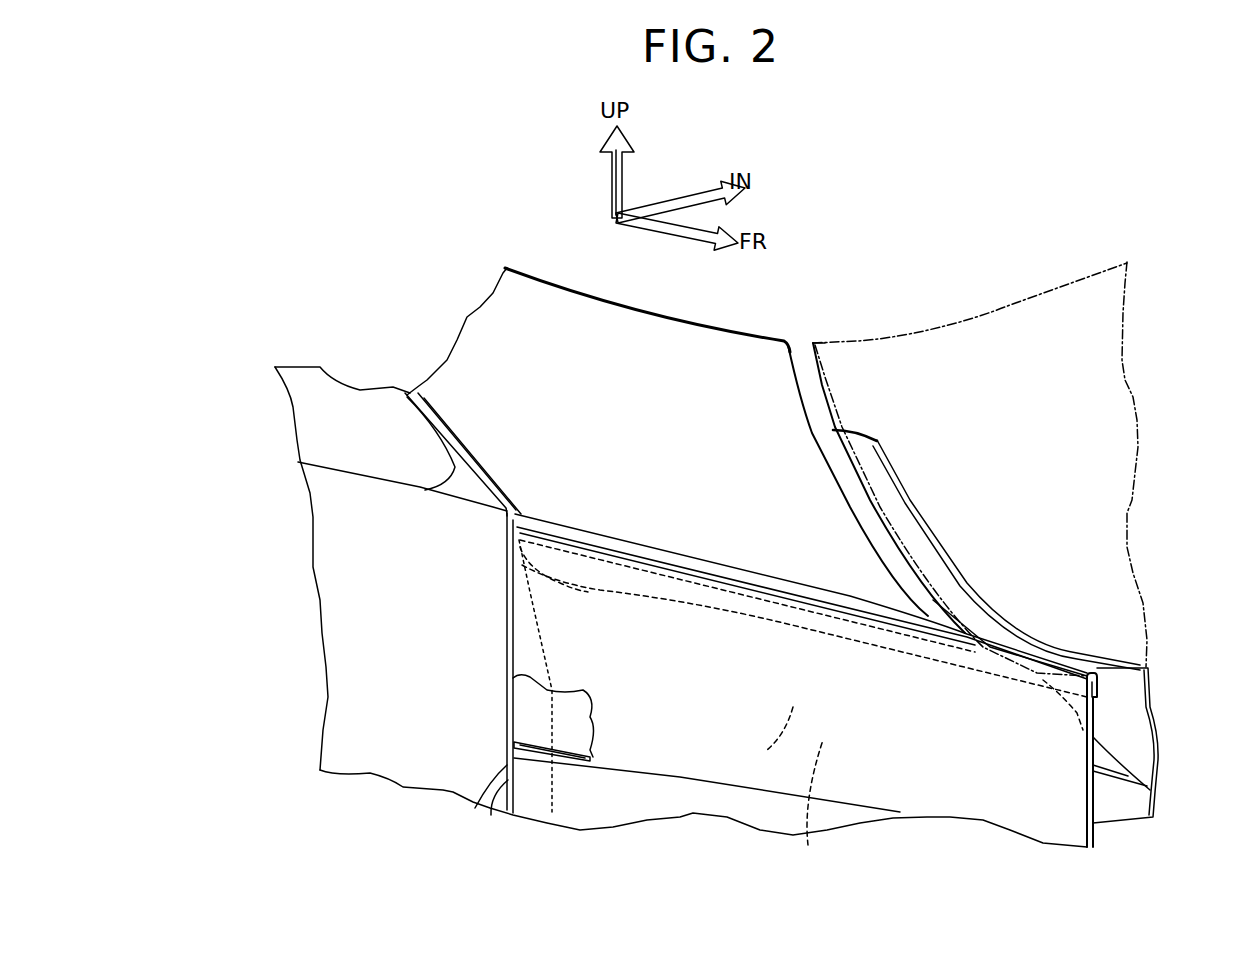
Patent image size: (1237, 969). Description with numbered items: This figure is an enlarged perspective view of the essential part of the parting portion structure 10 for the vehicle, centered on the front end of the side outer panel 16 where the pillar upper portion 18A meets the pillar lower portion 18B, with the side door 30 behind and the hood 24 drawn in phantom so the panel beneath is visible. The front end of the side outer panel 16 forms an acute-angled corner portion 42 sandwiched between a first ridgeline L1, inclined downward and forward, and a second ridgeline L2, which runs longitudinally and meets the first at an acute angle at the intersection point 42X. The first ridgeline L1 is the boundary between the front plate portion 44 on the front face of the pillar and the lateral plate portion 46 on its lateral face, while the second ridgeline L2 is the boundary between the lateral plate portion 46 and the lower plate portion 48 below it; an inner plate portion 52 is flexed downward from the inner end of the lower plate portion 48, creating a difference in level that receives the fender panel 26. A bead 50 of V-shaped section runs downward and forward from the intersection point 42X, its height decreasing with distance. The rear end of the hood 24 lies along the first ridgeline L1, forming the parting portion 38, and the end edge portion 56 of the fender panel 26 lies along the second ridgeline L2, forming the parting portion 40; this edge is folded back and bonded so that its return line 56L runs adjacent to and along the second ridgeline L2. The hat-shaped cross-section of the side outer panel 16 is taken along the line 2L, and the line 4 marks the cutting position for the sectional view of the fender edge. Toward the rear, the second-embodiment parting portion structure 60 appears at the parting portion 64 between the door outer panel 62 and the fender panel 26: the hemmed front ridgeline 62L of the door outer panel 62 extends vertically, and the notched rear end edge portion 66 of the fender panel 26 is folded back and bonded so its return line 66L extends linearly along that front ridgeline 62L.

The parting portion structure for the vehicle 10 is at (707, 542).
The side outer panel 16 is at (773, 322).
The pillar upper portion 18A is at (493, 317).
The pillar lower portion 18B is at (812, 809).
The hood 24 is at (1061, 300).
The fender panel 26 is at (913, 777).
The side door 30 is at (328, 533).
The parting portion 38 is at (846, 382).
The parting portion 40 is at (655, 528).
The corner portion 42 is at (922, 592).
The intersection point 42X is at (935, 600).
The front plate portion 44 is at (917, 517).
The lateral plate portion 46 is at (800, 562).
The lower plate portion 48 is at (817, 592).
The bead 50 is at (930, 627).
The inner plate portion 52 is at (777, 741).
The end edge portion 56 is at (688, 594).
The return line 56L is at (669, 563).
The parting portion structure for the vehicle 60 is at (486, 633).
The door outer panel 62 is at (328, 578).
The front ridgeline 62L is at (475, 808).
The parting portion 64 is at (495, 660).
The end edge portion 66 is at (528, 802).
The return line 66L is at (491, 815).
The line 2L- 2L is at (872, 470).
The line 4- 4 is at (745, 357).
The first ridgeline L1 is at (855, 512).
The second ridgeline L2 is at (733, 563).